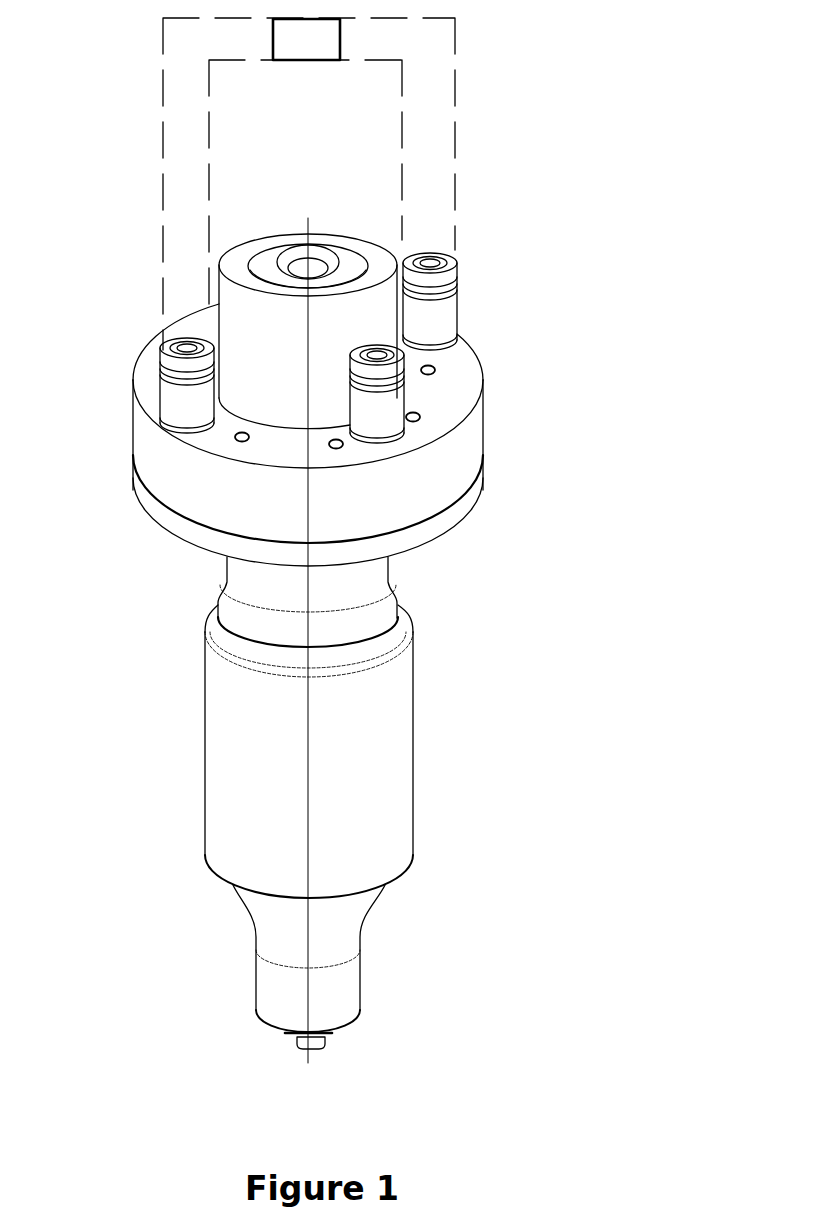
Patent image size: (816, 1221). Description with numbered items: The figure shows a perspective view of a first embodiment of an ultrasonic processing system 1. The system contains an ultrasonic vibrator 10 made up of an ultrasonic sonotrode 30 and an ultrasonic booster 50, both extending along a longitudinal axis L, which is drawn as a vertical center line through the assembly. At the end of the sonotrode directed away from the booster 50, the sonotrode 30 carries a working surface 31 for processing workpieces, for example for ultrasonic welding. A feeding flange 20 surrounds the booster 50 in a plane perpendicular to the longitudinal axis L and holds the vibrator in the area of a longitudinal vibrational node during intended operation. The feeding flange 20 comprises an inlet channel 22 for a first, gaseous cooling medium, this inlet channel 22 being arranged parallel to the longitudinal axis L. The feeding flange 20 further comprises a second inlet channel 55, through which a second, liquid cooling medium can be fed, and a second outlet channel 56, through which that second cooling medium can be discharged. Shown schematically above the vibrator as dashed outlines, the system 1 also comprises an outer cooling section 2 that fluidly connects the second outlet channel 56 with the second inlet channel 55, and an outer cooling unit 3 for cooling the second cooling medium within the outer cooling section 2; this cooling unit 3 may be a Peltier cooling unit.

The ultrasonic processing system 1 is at (385, 566).
The outer cooling section 2 is at (443, 57).
The outer cooling unit 3 is at (311, 60).
The ultrasonic vibrator 10 is at (385, 674).
The feeding flange 20 is at (487, 435).
The inlet channel 22 is at (393, 392).
The ultrasonic sonotrode 30 is at (398, 808).
The working surface 31 is at (317, 1048).
The ultrasonic booster 50 is at (383, 600).
The second inlet channel 55 is at (452, 298).
The second outlet channel 56 is at (178, 391).
The longitudinal axis L is at (308, 228).